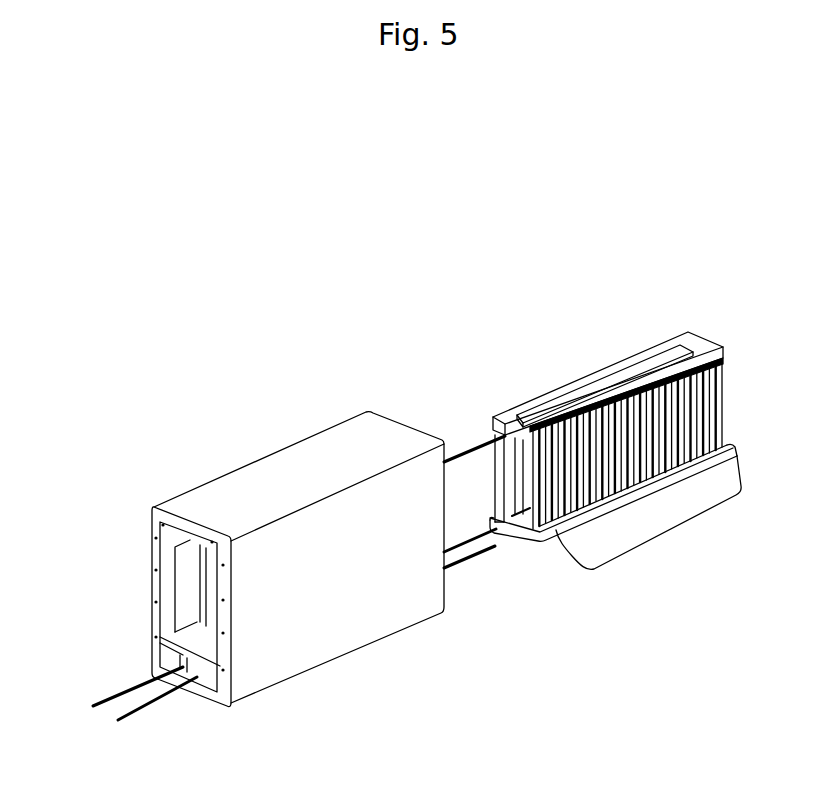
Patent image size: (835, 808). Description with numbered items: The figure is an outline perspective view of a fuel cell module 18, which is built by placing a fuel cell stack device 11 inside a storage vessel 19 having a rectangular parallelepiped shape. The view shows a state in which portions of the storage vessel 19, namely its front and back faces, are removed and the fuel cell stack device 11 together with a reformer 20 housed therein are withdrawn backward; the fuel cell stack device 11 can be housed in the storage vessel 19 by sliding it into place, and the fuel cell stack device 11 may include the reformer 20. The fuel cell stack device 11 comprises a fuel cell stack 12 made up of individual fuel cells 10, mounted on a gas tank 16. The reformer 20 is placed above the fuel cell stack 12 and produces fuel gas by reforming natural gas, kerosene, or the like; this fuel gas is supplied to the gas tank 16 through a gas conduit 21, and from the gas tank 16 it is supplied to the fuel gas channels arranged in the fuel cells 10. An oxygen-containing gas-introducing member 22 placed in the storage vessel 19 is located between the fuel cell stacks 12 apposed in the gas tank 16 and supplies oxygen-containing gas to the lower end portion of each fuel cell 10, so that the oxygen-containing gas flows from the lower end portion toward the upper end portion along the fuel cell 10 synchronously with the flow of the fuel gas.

The fuel cell 10 is at (734, 362).
The fuel cell stack device 11 is at (640, 322).
The fuel cell stack 12 is at (680, 518).
The gas tank 16 is at (540, 546).
The fuel cell module 18 is at (244, 212).
The storage vessel 19 is at (298, 460).
The reformer 20 is at (500, 432).
The gas conduit 21 is at (497, 433).
The oxygen-containing gas-introducing member 22 is at (213, 573).